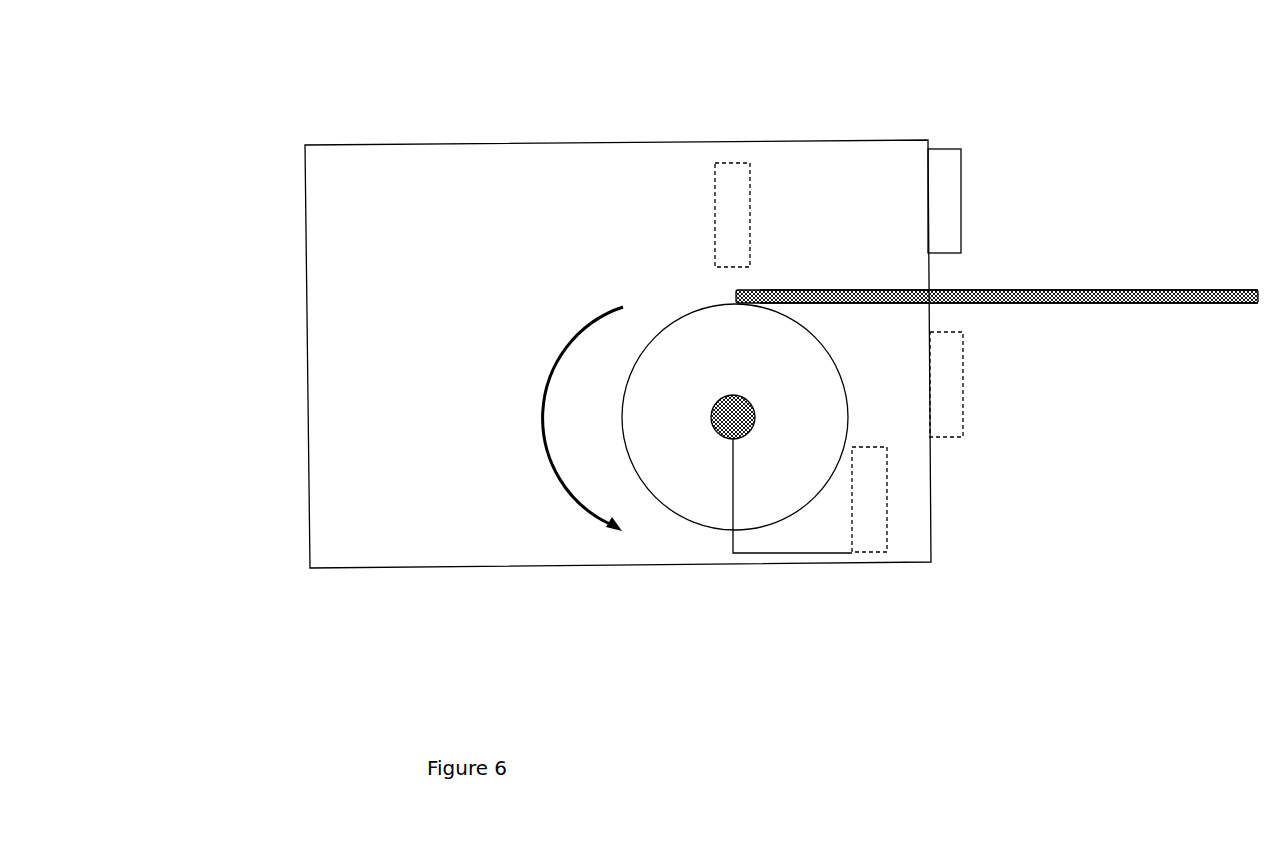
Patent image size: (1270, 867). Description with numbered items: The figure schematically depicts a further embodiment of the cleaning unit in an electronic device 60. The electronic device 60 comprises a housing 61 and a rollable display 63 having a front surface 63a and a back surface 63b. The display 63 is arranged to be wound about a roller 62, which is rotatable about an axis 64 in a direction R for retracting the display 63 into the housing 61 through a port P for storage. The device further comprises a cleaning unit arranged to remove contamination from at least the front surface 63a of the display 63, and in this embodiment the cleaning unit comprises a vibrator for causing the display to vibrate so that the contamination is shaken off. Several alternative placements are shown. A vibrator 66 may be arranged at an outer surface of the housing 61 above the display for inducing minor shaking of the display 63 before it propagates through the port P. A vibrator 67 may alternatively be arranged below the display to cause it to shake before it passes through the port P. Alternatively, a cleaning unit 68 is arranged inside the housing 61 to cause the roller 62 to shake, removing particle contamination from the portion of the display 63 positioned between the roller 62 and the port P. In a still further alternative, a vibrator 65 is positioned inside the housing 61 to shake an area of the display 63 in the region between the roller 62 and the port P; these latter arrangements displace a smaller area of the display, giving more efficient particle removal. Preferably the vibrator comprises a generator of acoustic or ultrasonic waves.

The electronic device 60 is at (313, 68).
The housing 61 is at (495, 143).
The roller 62 is at (685, 313).
The rollable display 63 is at (1135, 290).
The front surface 63a is at (993, 291).
The back surface 63b is at (1078, 303).
The axis 64 is at (710, 417).
The vibrator 65 is at (715, 197).
The vibrator 66 is at (962, 182).
The vibrator 67 is at (965, 403).
The cleaning unit 68 is at (890, 518).
The port P is at (936, 283).
The direction R is at (542, 427).